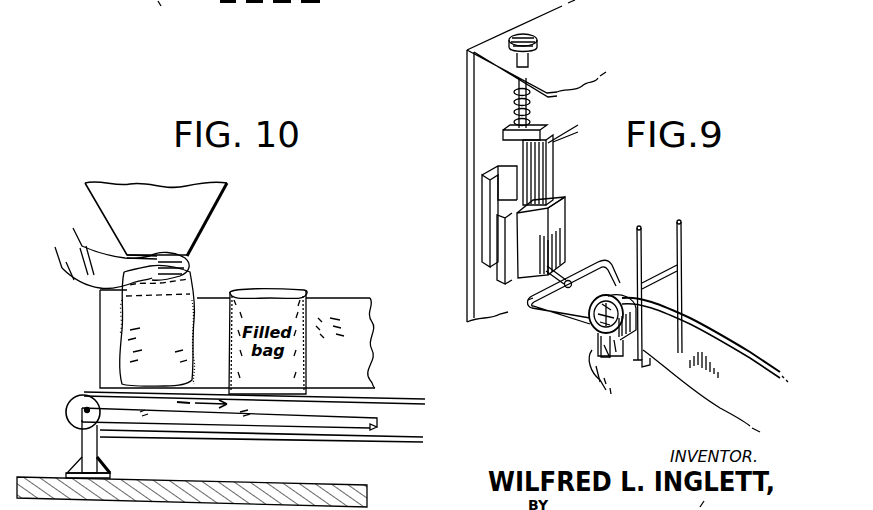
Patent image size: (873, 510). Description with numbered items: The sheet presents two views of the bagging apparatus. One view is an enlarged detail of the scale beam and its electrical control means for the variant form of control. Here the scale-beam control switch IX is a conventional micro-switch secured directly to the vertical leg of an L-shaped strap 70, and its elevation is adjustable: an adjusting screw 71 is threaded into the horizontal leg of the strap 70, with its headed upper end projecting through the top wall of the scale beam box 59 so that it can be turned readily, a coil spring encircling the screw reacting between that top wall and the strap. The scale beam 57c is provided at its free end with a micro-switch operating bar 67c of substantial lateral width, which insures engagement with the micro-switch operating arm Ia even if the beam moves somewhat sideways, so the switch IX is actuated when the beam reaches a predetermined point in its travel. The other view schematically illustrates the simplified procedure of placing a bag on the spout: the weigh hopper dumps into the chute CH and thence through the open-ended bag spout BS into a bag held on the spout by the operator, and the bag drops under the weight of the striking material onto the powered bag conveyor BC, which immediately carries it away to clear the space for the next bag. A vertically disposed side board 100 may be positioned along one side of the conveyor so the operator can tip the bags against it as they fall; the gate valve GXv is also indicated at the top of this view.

In FIG. 10, the gate valve GXv is at (193, 2).
In FIG. 10, the chute CH is at (205, 200).
In FIG. 10, the bag spout BS is at (200, 274).
In FIG. 10, the side board 100 is at (345, 309).
In FIG. 10, the bag conveyor BC is at (405, 400).
In FIG. 9, the adjusting screw 71 is at (516, 100).
In FIG. 9, the scale beam box 59 is at (478, 125).
In FIG. 9, the L-shaped strap 70 is at (546, 169).
In FIG. 9, the scale-beam control switch IX is at (554, 239).
In FIG. 9, the micro-switch operating arm Ia is at (562, 268).
In FIG. 9, the micro-switch operating bar 67c is at (537, 317).
In FIG. 9, the scale beam 57c is at (722, 360).